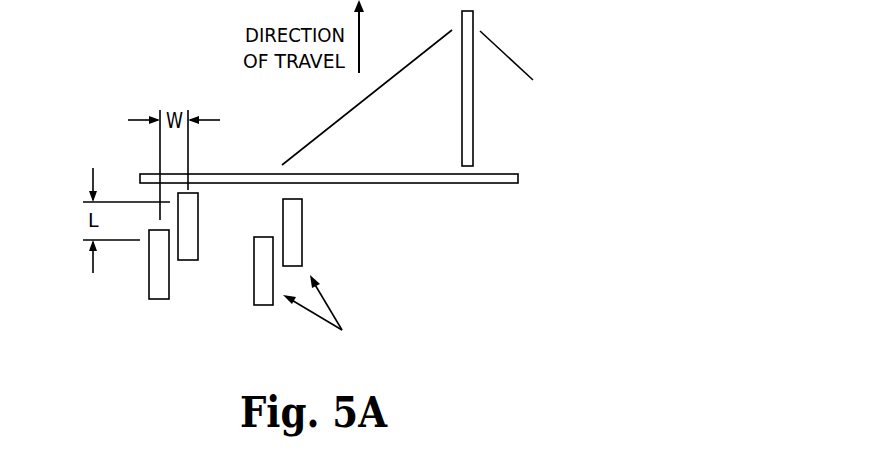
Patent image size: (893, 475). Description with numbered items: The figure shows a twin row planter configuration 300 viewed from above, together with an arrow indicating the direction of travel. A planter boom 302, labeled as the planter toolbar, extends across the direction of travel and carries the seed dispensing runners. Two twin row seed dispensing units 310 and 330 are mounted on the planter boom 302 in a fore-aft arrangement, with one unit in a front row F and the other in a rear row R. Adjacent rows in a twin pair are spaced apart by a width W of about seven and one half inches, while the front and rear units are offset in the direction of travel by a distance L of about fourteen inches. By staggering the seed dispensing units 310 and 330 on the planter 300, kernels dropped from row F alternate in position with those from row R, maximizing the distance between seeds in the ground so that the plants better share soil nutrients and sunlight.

The twin row planter configuration 300 is at (124, 54).
The planter boom 302 is at (518, 183).
The twin row seed dispensing unit 310 is at (159, 310).
The twin row seed dispensing unit 330 is at (463, 330).